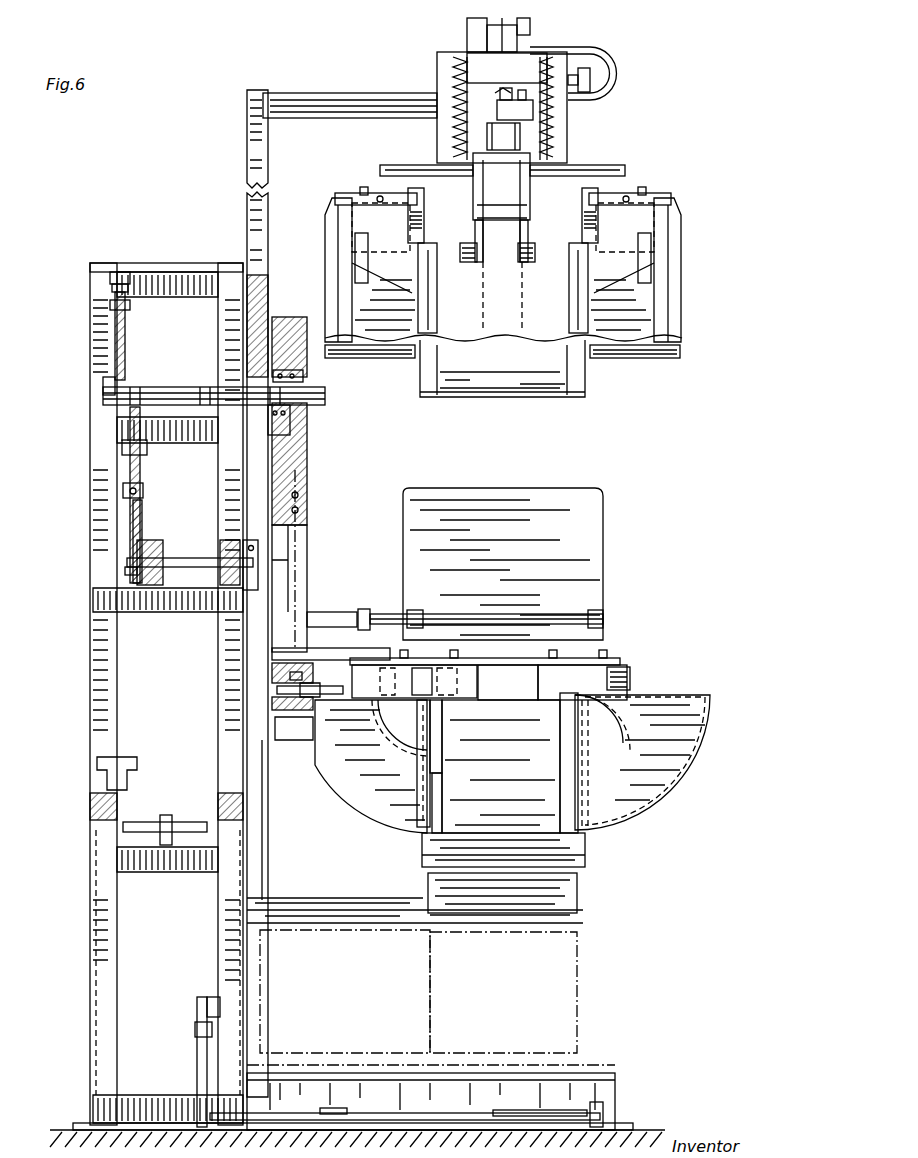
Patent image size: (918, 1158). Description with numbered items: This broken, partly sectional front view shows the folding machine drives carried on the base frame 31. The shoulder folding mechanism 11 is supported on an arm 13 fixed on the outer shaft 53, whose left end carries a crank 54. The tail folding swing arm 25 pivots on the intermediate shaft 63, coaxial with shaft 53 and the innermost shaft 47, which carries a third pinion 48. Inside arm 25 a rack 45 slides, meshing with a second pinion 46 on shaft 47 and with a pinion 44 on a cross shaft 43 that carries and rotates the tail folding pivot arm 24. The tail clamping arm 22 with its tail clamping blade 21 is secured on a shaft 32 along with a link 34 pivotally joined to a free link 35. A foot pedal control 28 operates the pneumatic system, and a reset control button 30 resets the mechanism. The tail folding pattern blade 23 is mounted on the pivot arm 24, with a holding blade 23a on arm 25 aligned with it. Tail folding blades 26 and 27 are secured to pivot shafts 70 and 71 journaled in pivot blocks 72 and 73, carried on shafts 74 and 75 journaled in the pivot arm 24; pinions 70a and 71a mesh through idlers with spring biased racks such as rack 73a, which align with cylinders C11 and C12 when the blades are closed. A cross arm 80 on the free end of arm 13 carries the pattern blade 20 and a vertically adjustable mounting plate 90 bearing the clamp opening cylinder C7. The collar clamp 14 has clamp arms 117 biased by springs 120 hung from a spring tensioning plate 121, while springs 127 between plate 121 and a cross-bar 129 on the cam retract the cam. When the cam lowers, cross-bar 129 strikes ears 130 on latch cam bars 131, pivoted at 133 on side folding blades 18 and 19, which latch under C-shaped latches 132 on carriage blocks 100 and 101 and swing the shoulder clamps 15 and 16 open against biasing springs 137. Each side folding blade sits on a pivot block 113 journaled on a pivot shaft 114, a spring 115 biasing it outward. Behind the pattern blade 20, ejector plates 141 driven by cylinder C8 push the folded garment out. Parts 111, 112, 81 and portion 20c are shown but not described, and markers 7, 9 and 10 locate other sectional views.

The section line 10- 10 is at (508, 21).
The control valve C8 is at (497, 38).
The pipe 121 is at (560, 48).
The bar 80 is at (333, 69).
The bar 30 is at (330, 100).
The cylinder 90 is at (437, 72).
The piston 120 is at (507, 68).
The bellows 127 is at (455, 122).
The control valve C7 is at (510, 119).
The bar 100 is at (425, 200).
The bar 101 is at (560, 193).
The bracket 130 is at (516, 154).
The bracket 131 is at (380, 200).
The bracket 129 is at (630, 173).
The boss 113 is at (410, 193).
The section line 11- 11 is at (357, 188).
The pin 137 is at (330, 238).
The plate 133 is at (501, 220).
The spring 115 is at (408, 232).
The boss 117 is at (504, 213).
The plate 132 is at (501, 229).
The cone 114 is at (596, 246).
The left housing 16 is at (343, 278).
The right housing 15 is at (663, 273).
The plate 111 is at (437, 283).
The spindle 14 is at (504, 276).
The plate 112 is at (569, 283).
The section line 9- 9 is at (707, 190).
The column 13 is at (268, 160).
The frame 31 is at (100, 268).
The screw 53 is at (250, 363).
The gear 48 is at (110, 382).
The bracket 63 is at (300, 372).
The shaft 46 is at (305, 392).
The bearing 47 is at (300, 422).
The slide 25 is at (305, 460).
The rod 54 is at (142, 430).
The clamp 35 is at (135, 483).
The rod 34 is at (145, 515).
The shaft 32 is at (180, 558).
The plate 19 is at (388, 362).
The plate 18 is at (668, 368).
The workpiece 20 is at (547, 382).
The workpiece portion 20c is at (467, 361).
The ring 81 is at (540, 368).
The rim 141 is at (428, 395).
The arm 45 is at (300, 590).
The housing 23a is at (593, 558).
The bracket 44 is at (308, 670).
The shaft 43 is at (338, 685).
The plate 24 is at (617, 660).
The control valve C11 is at (632, 668).
The section line 7- 7 is at (755, 670).
The post 72 is at (535, 700).
The pin 73a is at (560, 705).
The pin 71 is at (447, 722).
The pin 71a is at (450, 740).
The pin 70 is at (560, 712).
The pin 70a is at (560, 738).
The control valve C12 is at (375, 705).
The rod 75 is at (420, 790).
The post 73 is at (442, 775).
The rod 74 is at (590, 782).
The left cup 27 is at (355, 790).
The right cup 26 is at (663, 790).
The pedestal 23 is at (585, 852).
The base frame 22 is at (265, 820).
The base 21 is at (580, 1003).
The rod 28 is at (500, 1112).